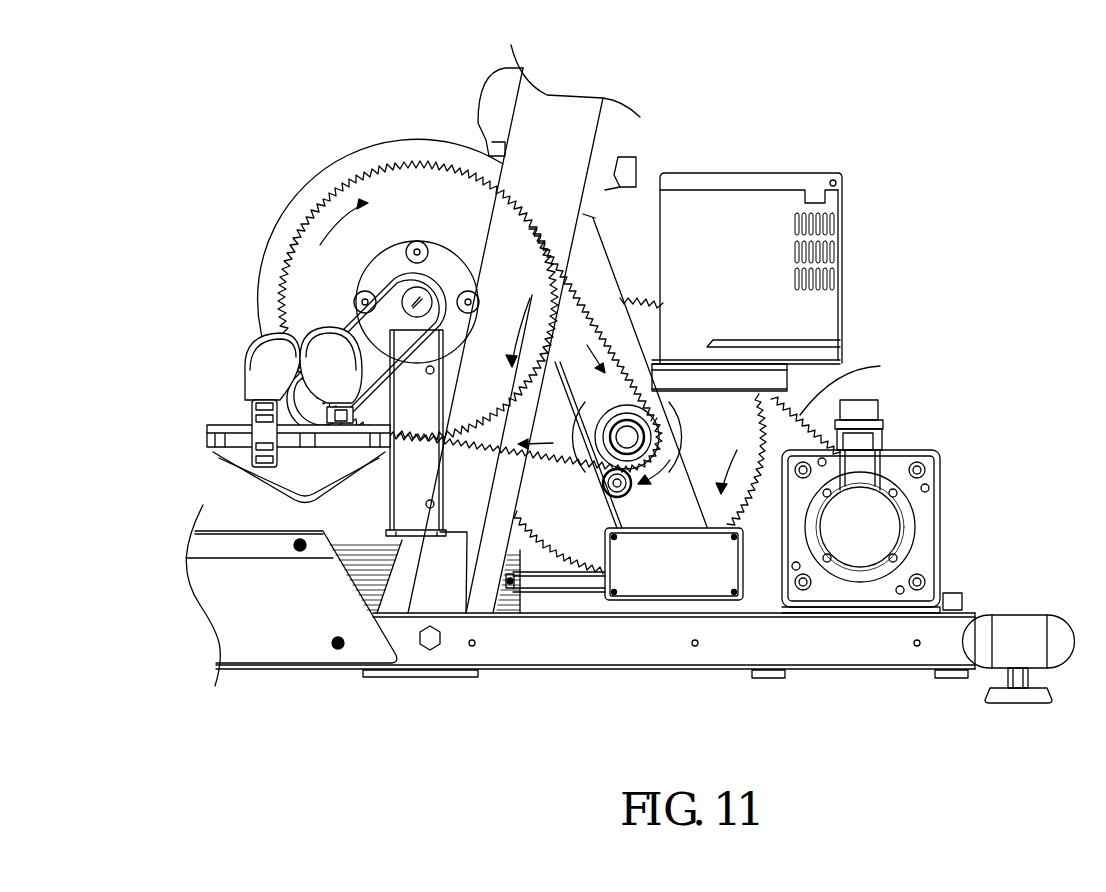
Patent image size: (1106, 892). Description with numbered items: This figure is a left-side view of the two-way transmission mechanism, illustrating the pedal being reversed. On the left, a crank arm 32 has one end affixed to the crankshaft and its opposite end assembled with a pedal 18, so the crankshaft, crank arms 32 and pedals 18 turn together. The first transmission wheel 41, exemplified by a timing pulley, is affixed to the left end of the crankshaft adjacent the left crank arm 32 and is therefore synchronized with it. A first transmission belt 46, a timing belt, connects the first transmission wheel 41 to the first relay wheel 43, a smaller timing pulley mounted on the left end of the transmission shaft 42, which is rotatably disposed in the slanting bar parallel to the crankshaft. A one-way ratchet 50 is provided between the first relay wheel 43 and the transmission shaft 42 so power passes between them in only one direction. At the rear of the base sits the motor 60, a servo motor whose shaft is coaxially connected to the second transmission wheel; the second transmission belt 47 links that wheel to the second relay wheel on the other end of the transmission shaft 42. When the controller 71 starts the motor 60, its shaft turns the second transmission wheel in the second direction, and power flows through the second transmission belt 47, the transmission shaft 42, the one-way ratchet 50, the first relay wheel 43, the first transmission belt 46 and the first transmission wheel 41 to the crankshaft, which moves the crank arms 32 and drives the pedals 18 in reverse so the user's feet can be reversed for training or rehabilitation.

The pedal 18 is at (228, 462).
The crank arm 32 is at (352, 338).
The first transmission wheel 41 is at (400, 187).
The transmission shaft 42 is at (600, 456).
The first relay wheel 43 is at (615, 469).
The first transmission belt 46 is at (482, 447).
The second transmission belt 47 is at (800, 432).
The one-way ratchet 50 is at (582, 460).
The motor 60 is at (965, 449).
The controller 71 is at (845, 165).